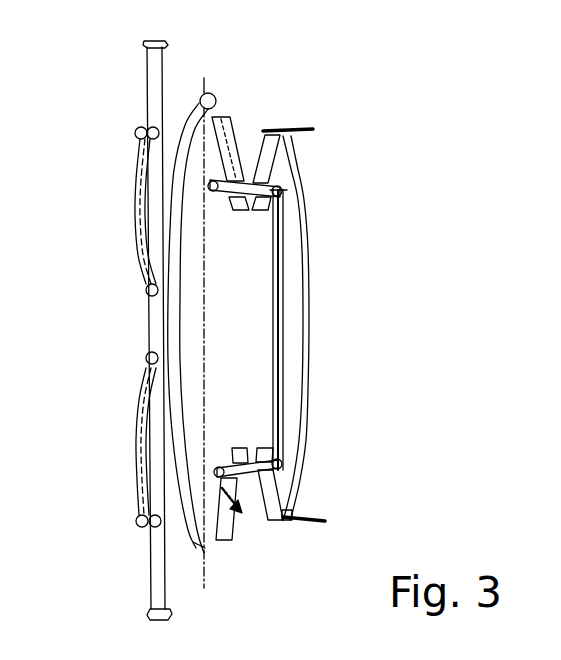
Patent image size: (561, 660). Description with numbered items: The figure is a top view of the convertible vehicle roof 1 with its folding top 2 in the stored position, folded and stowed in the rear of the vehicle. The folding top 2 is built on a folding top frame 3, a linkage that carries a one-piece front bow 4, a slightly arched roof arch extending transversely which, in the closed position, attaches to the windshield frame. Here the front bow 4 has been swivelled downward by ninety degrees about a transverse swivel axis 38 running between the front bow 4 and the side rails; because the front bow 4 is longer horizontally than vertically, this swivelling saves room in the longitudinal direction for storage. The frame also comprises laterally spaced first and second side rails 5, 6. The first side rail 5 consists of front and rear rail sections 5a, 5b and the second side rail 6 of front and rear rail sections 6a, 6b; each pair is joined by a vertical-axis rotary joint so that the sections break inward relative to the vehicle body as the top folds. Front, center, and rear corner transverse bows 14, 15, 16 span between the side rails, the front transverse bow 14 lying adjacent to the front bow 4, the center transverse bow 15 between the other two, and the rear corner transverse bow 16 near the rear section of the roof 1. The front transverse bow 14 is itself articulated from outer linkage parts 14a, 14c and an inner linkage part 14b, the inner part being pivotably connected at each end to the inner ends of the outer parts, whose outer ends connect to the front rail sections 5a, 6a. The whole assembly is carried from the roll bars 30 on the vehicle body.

The convertible vehicle roof 1 is at (352, 166).
The folding top 2 is at (256, 134).
The folding top frame 3 is at (235, 528).
The front bow 4 is at (172, 232).
The first side rail 5 is at (272, 532).
The front rail section 5a is at (220, 515).
The rear rail section 5b is at (282, 484).
The second side rail 6 is at (267, 138).
The front rail section 6a is at (240, 142).
The rear rail section 6b is at (273, 167).
The front transverse bow 14 is at (282, 357).
The outer linkage part 14a is at (270, 463).
The inner linkage part 14b is at (282, 300).
The outer linkage part 14c is at (250, 197).
The center transverse bow 15 is at (307, 242).
The rear corner transverse bow 16 is at (222, 386).
The roll bar 30 is at (158, 574).
The swivel axis 38 is at (208, 97).